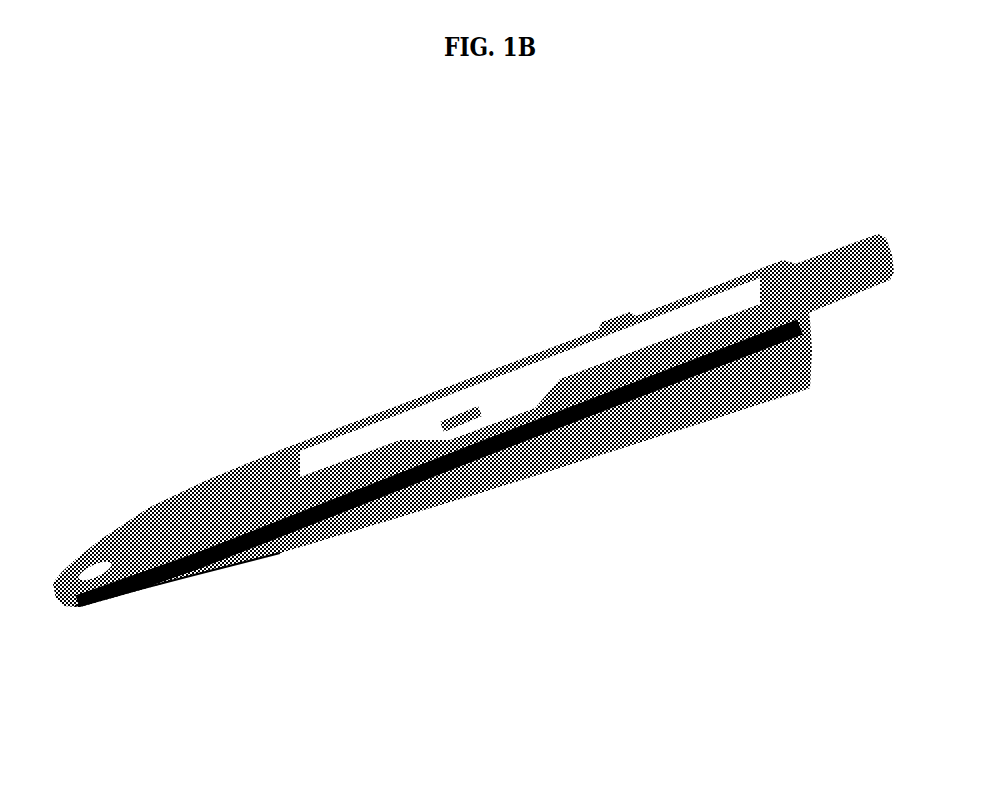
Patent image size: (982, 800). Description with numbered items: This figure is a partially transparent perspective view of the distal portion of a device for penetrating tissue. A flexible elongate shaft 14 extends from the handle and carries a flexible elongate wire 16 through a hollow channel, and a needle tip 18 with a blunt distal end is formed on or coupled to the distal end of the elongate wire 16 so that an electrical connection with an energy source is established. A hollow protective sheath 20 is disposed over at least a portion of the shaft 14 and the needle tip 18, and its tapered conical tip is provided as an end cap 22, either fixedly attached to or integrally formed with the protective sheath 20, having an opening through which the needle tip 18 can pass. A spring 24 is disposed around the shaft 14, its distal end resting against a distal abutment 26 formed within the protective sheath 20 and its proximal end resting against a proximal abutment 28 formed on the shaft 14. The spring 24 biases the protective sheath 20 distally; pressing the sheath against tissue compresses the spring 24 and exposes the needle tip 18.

The flexible elongate shaft 14 is at (735, 352).
The flexible elongate wire 16 is at (857, 293).
The needle tip 18 is at (90, 566).
The protective sheath 20 is at (326, 532).
The end cap 22 is at (205, 572).
The spring 24 is at (422, 477).
The distal abutment 26 is at (352, 460).
The proximal abutment 28 is at (460, 420).